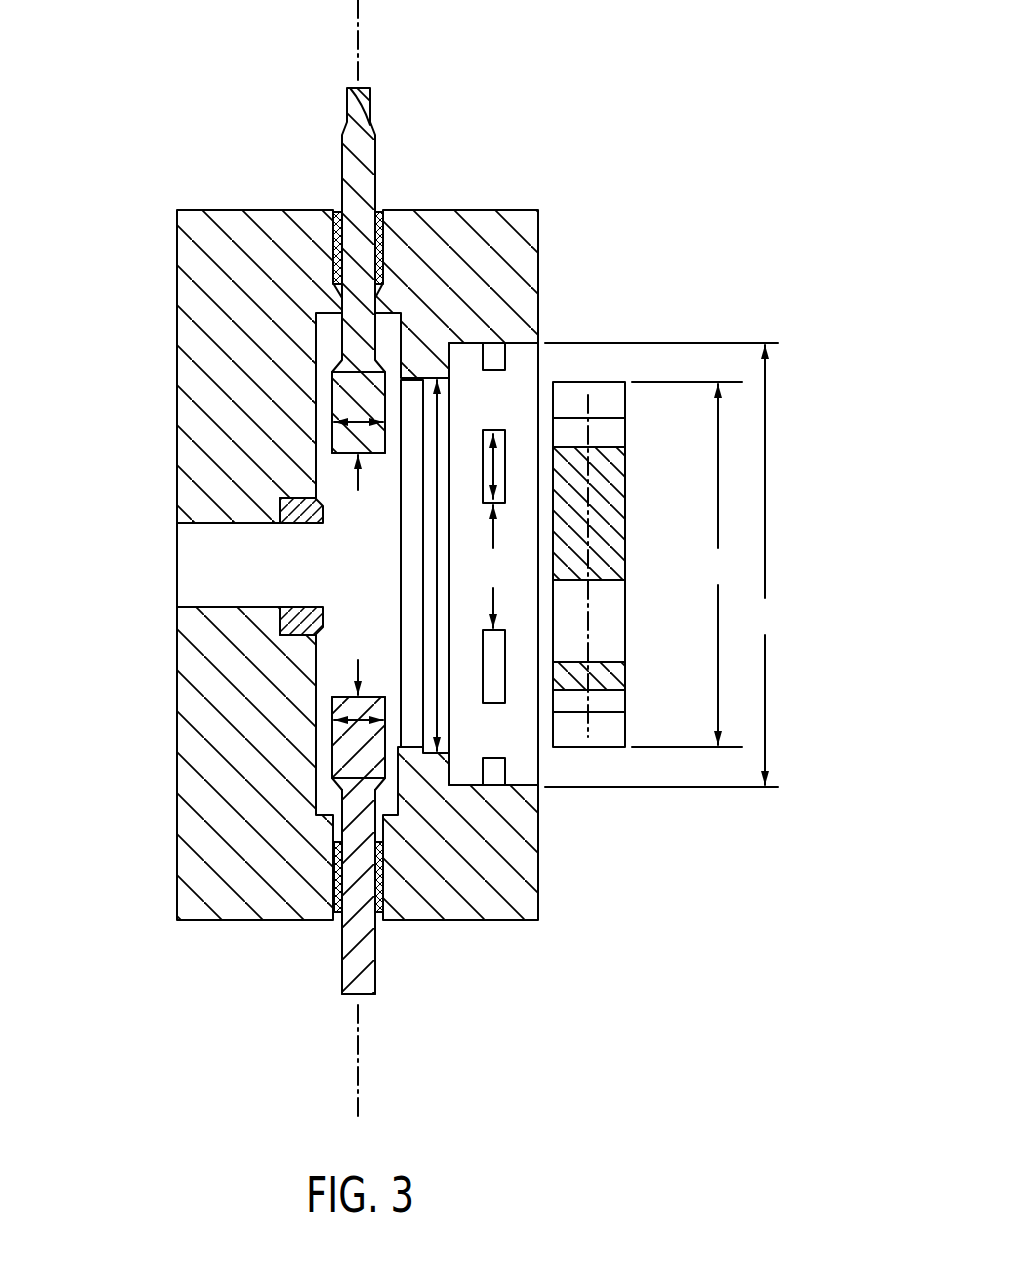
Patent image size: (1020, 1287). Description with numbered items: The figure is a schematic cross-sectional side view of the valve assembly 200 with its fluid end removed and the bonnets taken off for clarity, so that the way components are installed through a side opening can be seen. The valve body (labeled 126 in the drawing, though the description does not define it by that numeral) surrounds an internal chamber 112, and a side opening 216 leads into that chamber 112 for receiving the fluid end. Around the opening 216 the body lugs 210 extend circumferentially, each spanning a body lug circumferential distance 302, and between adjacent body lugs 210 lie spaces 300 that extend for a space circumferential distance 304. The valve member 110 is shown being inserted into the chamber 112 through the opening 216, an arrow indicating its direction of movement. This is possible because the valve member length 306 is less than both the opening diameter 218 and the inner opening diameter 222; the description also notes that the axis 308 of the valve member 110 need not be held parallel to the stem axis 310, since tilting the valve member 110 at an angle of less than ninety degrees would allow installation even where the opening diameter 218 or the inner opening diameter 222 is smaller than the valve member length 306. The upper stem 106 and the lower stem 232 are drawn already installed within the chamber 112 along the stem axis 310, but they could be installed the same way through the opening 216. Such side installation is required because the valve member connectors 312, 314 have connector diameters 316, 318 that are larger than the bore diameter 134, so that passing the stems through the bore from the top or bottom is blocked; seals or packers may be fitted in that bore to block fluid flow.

The valve assembly 200 is at (608, 50).
The upper stem 106 is at (362, 172).
The bore diameter 134 is at (435, 237).
The housing 126 is at (527, 237).
The opening 216 is at (573, 335).
The valve member connector 312 is at (348, 395).
The connector diameter 316 is at (353, 432).
The body lug circumferential distance 302 is at (500, 458).
The space circumferential distance 304 is at (492, 566).
The spaces 300 is at (517, 516).
The valve member 110 is at (613, 520).
The valve member length 306 is at (687, 564).
The opening diameter 218 is at (663, 566).
The axis 308 is at (592, 603).
The inner opening diameter 222 is at (436, 597).
The chamber 112 is at (340, 643).
The connector diameter 318 is at (362, 720).
The valve member connector 314 is at (378, 777).
The lower stem 232 is at (363, 962).
The stem axis 310 is at (363, 1030).
The body lugs 210 is at (500, 690).